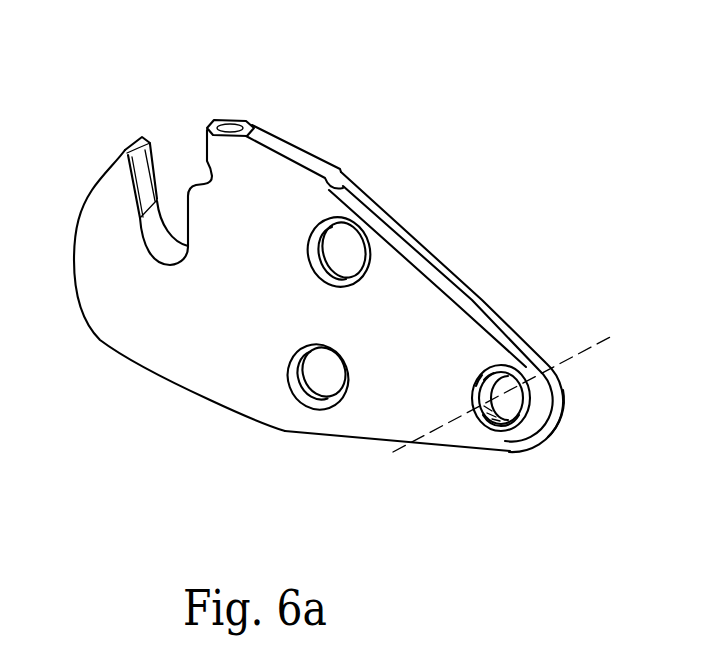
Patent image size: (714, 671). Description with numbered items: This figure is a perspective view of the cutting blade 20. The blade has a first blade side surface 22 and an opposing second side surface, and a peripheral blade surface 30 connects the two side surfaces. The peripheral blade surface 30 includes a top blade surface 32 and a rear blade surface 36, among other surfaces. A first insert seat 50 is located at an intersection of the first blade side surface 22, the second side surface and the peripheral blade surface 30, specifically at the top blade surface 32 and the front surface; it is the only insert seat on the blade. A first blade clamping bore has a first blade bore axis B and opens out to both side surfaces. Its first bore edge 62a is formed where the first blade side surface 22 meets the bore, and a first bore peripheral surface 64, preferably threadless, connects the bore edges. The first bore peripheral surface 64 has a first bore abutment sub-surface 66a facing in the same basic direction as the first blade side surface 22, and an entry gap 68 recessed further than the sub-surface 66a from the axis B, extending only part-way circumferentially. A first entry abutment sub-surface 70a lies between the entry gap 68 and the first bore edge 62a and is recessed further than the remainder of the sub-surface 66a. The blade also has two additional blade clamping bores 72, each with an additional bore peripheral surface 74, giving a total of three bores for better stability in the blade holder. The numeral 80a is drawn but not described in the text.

The cutting blade 20 is at (525, 65).
The first insert seat 50 is at (145, 95).
The first blade side surface 22 is at (167, 328).
The top blade surface 32 is at (277, 145).
The peripheral blade surface 30 is at (372, 186).
The rear blade surface 36 is at (560, 402).
The additional blade clamping bore 72 is at (340, 215).
The additional bore peripheral surface 74 is at (341, 277).
The first entry abutment sub-surface 70a is at (477, 393).
The first bore edge 62a is at (487, 422).
The first bore peripheral surface 64 is at (487, 423).
The first bore abutment sub-surface 66a is at (507, 423).
The entry gap 68 is at (505, 380).
The collar face 80a is at (494, 372).
The first blade bore axis B is at (573, 353).